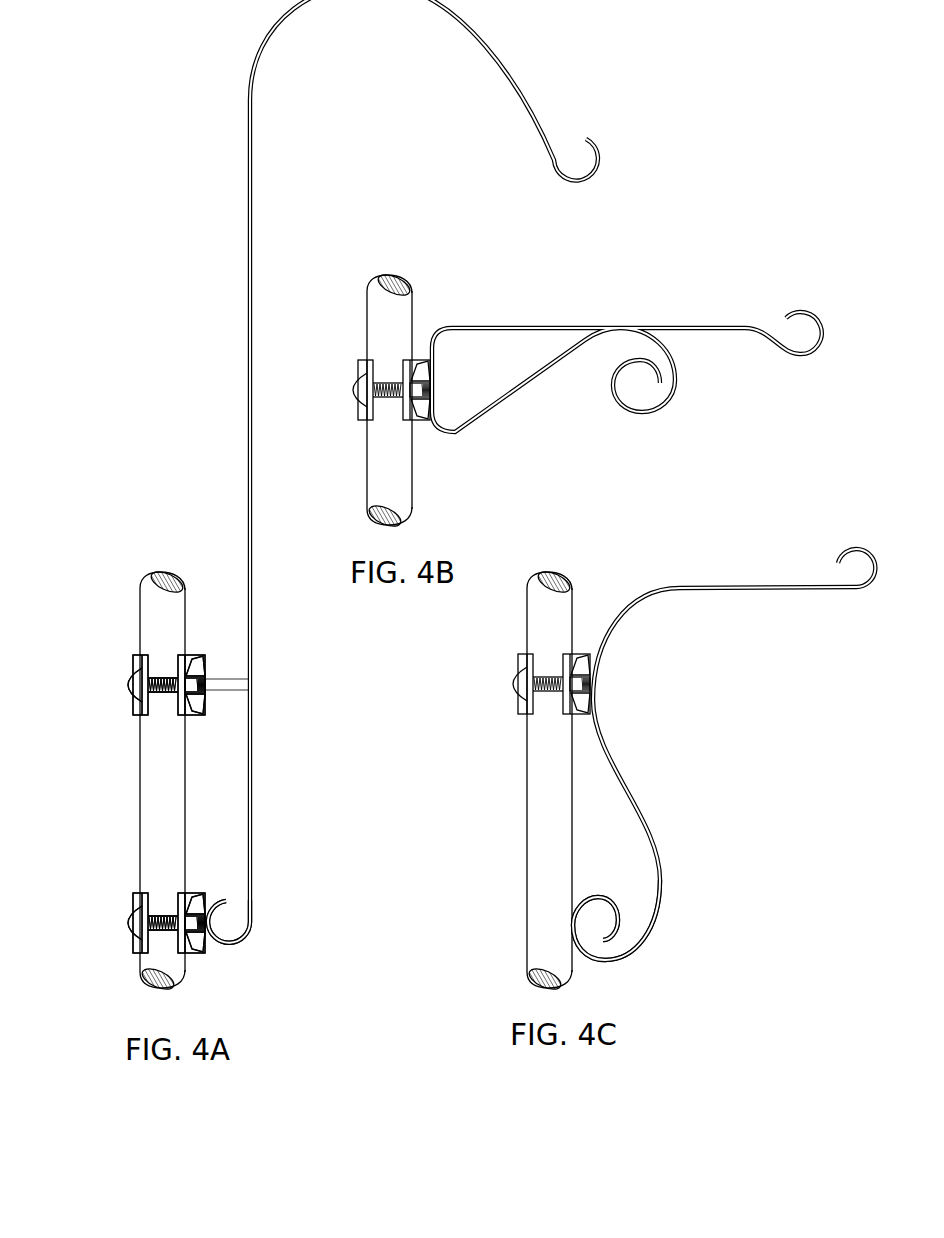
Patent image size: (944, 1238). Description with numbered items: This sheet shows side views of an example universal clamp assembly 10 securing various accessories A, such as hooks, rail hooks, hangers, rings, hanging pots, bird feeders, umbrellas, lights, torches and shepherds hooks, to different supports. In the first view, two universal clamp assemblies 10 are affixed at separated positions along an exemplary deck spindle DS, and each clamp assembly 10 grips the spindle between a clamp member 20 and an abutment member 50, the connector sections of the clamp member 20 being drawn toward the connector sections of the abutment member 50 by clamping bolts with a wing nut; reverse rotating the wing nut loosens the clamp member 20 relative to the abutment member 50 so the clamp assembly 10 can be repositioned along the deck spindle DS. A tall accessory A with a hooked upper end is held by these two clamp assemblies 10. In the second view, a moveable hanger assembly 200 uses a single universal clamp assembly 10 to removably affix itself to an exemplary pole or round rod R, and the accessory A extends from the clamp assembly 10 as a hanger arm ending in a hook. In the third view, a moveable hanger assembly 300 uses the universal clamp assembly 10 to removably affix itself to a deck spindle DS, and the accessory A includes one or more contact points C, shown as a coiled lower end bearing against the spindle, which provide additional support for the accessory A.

In FIG. 4A, the accessory A is at (249, 315).
In FIG. 4B, the accessory A is at (597, 328).
In FIG. 4C, the accessory A is at (752, 590).
In FIG. 4A, the deck spindle DS is at (153, 595).
In FIG. 4C, the deck spindle DS is at (560, 620).
In FIG. 4A, the universal clamp assembly 10 is at (112, 689).
In FIG. 4A, the clamp member 20 is at (187, 950).
In FIG. 4A, the abutment member 50 is at (137, 947).
In FIG. 4B, the round rod R is at (395, 330).
In FIG. 4B, the moveable hanger assembly 200 is at (560, 297).
In FIG. 4C, the moveable hanger assembly 300 is at (709, 548).
In FIG. 4C, the contact points C is at (573, 926).